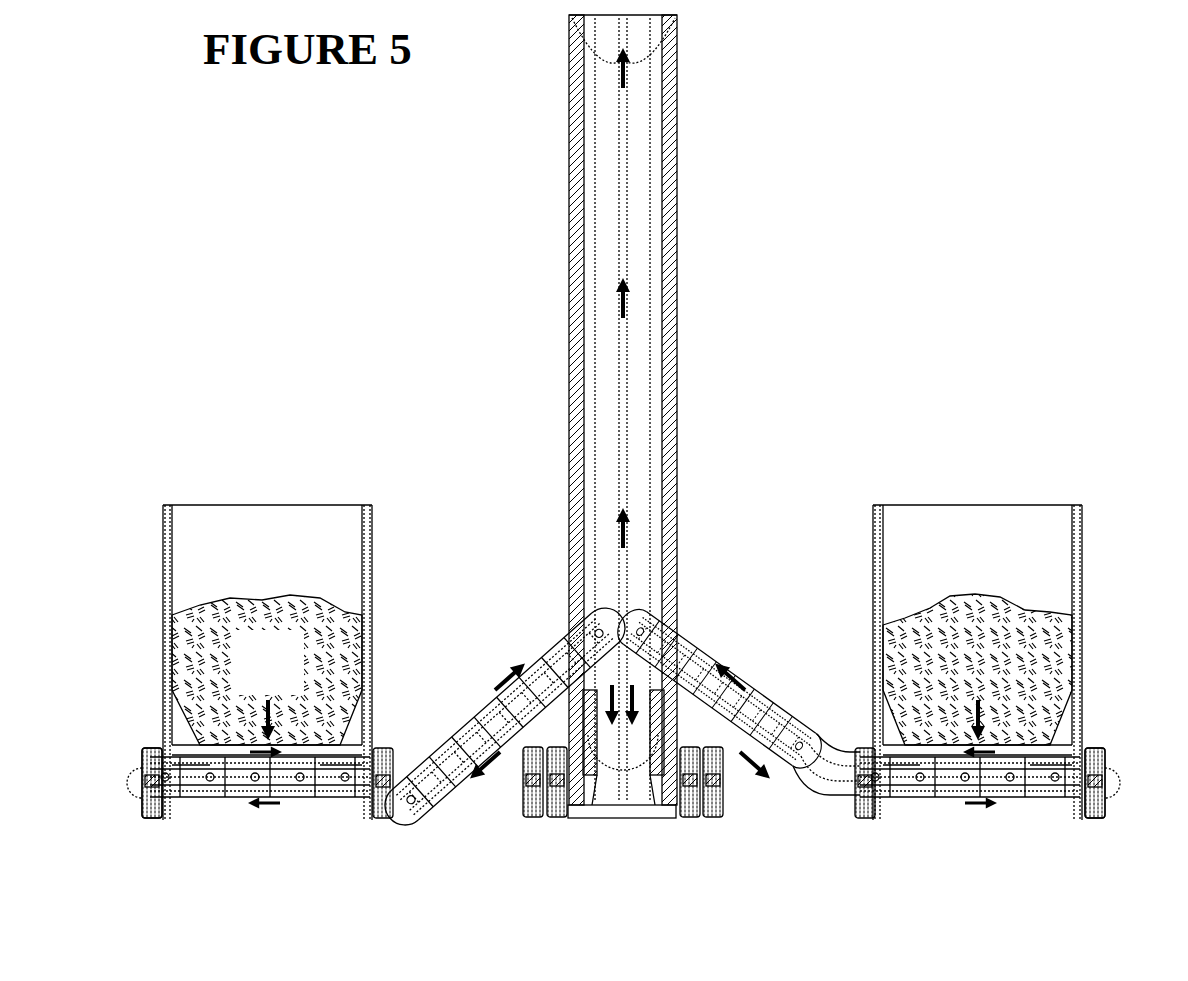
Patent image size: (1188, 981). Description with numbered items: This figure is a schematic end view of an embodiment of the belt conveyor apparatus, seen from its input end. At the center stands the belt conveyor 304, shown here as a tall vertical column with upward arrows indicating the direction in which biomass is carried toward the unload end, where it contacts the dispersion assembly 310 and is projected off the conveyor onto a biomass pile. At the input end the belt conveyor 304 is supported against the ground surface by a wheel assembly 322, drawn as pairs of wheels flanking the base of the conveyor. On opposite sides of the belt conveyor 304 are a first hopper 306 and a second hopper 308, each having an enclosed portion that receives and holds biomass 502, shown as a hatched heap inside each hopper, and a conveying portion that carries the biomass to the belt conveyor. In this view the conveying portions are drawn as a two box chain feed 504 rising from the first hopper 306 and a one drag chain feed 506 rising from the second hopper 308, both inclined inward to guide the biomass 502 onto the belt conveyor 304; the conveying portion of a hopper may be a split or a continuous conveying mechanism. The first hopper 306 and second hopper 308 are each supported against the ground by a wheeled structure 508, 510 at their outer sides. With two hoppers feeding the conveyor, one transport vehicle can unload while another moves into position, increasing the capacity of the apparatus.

The belt conveyor 304 is at (640, 335).
The dispersion assembly 310 is at (680, 38).
The wheel assembly 322 is at (726, 802).
The first hopper 306 is at (282, 495).
The second hopper 308 is at (998, 505).
The biomass 502 is at (1085, 582).
The two box chain feed 504 is at (392, 770).
The one drag chain feed 506 is at (715, 668).
The wheeled structure 508 is at (138, 740).
The wheeled structure 510 is at (1102, 740).